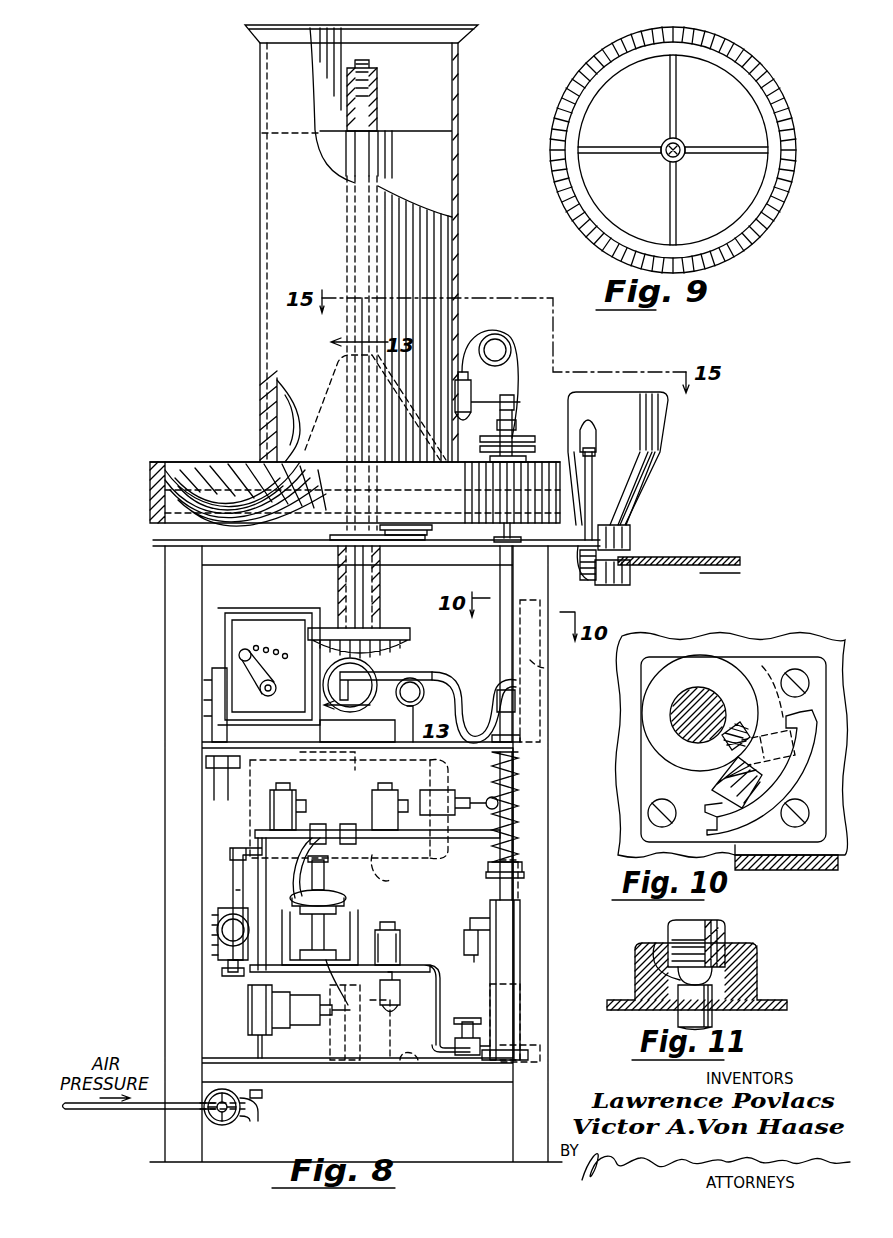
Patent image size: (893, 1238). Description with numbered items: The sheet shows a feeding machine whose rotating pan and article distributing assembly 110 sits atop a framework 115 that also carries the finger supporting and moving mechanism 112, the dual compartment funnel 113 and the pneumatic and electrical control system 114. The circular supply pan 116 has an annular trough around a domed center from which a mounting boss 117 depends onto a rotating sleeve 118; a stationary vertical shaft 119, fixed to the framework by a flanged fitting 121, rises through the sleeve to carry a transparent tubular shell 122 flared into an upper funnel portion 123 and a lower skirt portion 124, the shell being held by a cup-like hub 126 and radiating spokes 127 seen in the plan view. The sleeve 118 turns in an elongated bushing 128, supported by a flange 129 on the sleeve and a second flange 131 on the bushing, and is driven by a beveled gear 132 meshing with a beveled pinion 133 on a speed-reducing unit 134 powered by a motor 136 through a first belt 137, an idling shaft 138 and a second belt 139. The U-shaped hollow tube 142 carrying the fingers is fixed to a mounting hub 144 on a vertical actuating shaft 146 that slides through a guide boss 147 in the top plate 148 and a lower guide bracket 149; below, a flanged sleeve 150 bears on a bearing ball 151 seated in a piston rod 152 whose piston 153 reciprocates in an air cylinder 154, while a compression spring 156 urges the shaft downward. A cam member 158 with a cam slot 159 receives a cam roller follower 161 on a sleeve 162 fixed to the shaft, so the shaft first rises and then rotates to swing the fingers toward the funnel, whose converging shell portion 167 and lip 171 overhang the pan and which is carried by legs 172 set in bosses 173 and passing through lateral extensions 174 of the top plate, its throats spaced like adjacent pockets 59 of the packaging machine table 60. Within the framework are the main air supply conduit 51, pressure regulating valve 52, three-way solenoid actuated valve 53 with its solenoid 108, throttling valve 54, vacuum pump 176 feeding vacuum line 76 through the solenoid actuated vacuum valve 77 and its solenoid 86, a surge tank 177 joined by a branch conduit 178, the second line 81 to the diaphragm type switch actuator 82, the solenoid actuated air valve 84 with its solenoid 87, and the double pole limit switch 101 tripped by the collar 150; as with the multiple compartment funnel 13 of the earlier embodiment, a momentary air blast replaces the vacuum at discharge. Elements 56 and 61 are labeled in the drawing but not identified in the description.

In FIG. 8, the rotating pan and article distributing assembly 110 is at (172, 446).
In FIG. 8, the finger supporting and moving mechanism 112 is at (530, 784).
In FIG. 8, the dual compartment funnel 113 is at (676, 456).
In FIG. 8, the pneumatic and electrical control system 114 is at (218, 842).
In FIG. 8, the framework 115 is at (152, 572).
In FIG. 10, the framework 115 is at (811, 878).
In FIG. 8, the supply pan 116 is at (158, 492).
In FIG. 8, the mounting boss 117 is at (280, 432).
In FIG. 8, the rotating sleeve 118 is at (378, 600).
In FIG. 8, the stationary vertical shaft 119 is at (372, 171).
In FIG. 8, the flanged fitting 121 is at (400, 1060).
In FIG. 8, the tubular shell 122 is at (258, 176).
In FIG. 9, the tubular shell 122 is at (745, 214).
In FIG. 8, the funnel portion 123 is at (250, 35).
In FIG. 9, the funnel portion 123 is at (765, 98).
In FIG. 8, the skirt portion 124 is at (242, 478).
In FIG. 9, the skirt portion 124 is at (755, 236).
In FIG. 8, the cap or hub 126 is at (376, 100).
In FIG. 9, the cap or hub 126 is at (661, 144).
In FIG. 8, the radiating spokes 127 is at (452, 68).
In FIG. 9, the radiating spokes 127 is at (700, 152).
In FIG. 8, the elongated bushing 128 is at (338, 604).
In FIG. 8, the flange 129 is at (396, 530).
In FIG. 8, the second flange 131 is at (312, 540).
In FIG. 8, the beveled driving gear 132 is at (395, 645).
In FIG. 8, the beveled pinion 133 is at (432, 663).
In FIG. 8, the speed-reducing unit 134 is at (225, 645).
In FIG. 8, the motor 136 is at (416, 870).
In FIG. 8, the first belt 137 is at (332, 895).
In FIG. 8, the idling shaft 138 is at (206, 762).
In FIG. 8, the second belt 139 is at (212, 727).
In FIG. 8, the U-shaped hollow tube 142 is at (470, 458).
In FIG. 8, the mounting hub 144 is at (535, 450).
In FIG. 8, the actuating shaft 146 is at (500, 570).
In FIG. 10, the actuating shaft 146 is at (688, 698).
In FIG. 11, the actuating shaft 146 is at (728, 930).
In FIG. 8, the guide boss 147 is at (548, 590).
In FIG. 8, the top plate 148 is at (170, 540).
In FIG. 8, the lower guide bracket 149 is at (520, 725).
In FIG. 8, the flanged sleeve 150 is at (526, 874).
In FIG. 11, the flanged sleeve 150 is at (760, 968).
In FIG. 11, the bearing ball 151 is at (666, 960).
In FIG. 8, the piston rod 152 is at (520, 985).
In FIG. 11, the piston rod 152 is at (714, 1020).
In FIG. 8, the piston 153 is at (524, 1036).
In FIG. 8, the air cylinder 154 is at (490, 990).
In FIG. 8, the compression spring 156 is at (516, 830).
In FIG. 8, the cam member 158 is at (556, 610).
In FIG. 10, the cam member 158 is at (753, 818).
In FIG. 10, the cam slot 159 is at (712, 788).
In FIG. 10, the cam roller follower 161 is at (728, 743).
In FIG. 8, the sleeve 162 is at (540, 670).
In FIG. 10, the sleeve 162 is at (716, 668).
In FIG. 8, the converging shell portion 167 is at (645, 495).
In FIG. 8, the lip 171 is at (574, 442).
In FIG. 8, the legs 172 is at (594, 486).
In FIG. 8, the bosses 173 is at (600, 433).
In FIG. 8, the lateral extensions 174 is at (600, 585).
In FIG. 8, the vacuum pump 176 is at (218, 915).
In FIG. 8, the surge tank 177 is at (250, 790).
In FIG. 8, the branch conduit 178 is at (395, 773).
In FIG. 8, the multiple compartment funnel 13 is at (376, 700).
In FIG. 8, the main air supply conduit 51 is at (100, 1110).
In FIG. 8, the pressure regulating valve 52 is at (298, 1045).
In FIG. 8, the three-way solenoid actuated valve 53 is at (402, 968).
In FIG. 8, the throttling valve 54 is at (468, 1058).
In FIG. 8, the filter 56 is at (400, 1002).
In FIG. 8, the pockets 59 is at (633, 582).
In FIG. 8, the packaging machine table 60 is at (700, 558).
In FIG. 8, the slot 61 is at (706, 577).
In FIG. 8, the vacuum line 76 is at (235, 872).
In FIG. 8, the solenoid actuated vacuum valve 77 is at (393, 873).
In FIG. 8, the second line 81 is at (300, 896).
In FIG. 8, the diaphragm type switch actuator 82 is at (340, 904).
In FIG. 8, the solenoid actuated air valve 84 is at (300, 850).
In FIG. 8, the solenoid 86 is at (410, 800).
In FIG. 8, the solenoid 87 is at (270, 810).
In FIG. 8, the double pole limit switch 101 is at (448, 818).
In FIG. 8, the solenoid 108 is at (402, 940).